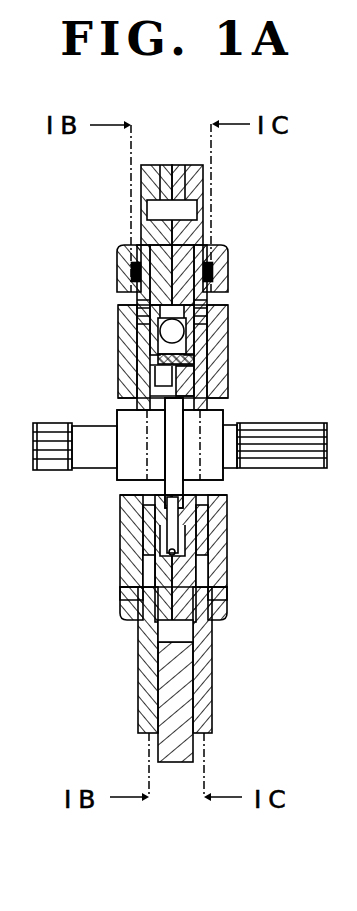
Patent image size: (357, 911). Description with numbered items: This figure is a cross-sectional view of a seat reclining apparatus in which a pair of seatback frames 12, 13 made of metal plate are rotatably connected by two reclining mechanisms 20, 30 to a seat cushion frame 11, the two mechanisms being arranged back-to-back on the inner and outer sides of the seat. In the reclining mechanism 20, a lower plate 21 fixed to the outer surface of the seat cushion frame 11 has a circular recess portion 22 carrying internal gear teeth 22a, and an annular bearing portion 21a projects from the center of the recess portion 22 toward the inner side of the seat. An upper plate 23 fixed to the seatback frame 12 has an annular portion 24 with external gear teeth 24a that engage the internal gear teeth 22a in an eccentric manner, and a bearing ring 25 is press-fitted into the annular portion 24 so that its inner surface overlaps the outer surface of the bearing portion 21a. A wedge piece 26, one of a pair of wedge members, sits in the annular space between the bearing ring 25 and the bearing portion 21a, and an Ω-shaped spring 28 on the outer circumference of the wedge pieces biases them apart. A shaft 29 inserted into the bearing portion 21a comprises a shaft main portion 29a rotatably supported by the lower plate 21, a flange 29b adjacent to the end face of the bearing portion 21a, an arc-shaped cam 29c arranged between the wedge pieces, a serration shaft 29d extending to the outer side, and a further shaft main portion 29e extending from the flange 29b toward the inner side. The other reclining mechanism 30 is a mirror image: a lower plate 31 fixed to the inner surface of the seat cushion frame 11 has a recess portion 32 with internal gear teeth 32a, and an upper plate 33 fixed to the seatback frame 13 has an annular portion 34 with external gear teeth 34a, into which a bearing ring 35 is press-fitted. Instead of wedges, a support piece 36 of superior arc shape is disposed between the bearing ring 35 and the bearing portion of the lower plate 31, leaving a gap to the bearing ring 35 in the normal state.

The seat cushion frame 11 is at (188, 716).
The seatback frame 12 is at (128, 252).
The seatback frame 13 is at (216, 250).
The reclining mechanism 20 is at (66, 276).
The lower plate 21 is at (120, 318).
The bearing portion 21a is at (130, 418).
The recess portion 22 is at (132, 600).
The internal gear teeth 22a is at (132, 592).
The upper plate 23 is at (150, 183).
The annular portion 24 is at (127, 548).
The external gear teeth 24a is at (128, 568).
The bearing ring 25 is at (142, 355).
The wedge piece 26 is at (135, 373).
The Ω-shaped spring 28 is at (186, 333).
The shaft 29 is at (300, 424).
The shaft main portion 29a is at (120, 452).
The flange 29b is at (180, 462).
The cam 29c is at (130, 495).
The serration shaft 29d is at (38, 432).
The shaft main portion 29e is at (212, 448).
The reclining mechanism 30 is at (285, 272).
The lower plate 31 is at (228, 315).
The recess portion 32 is at (218, 592).
The internal gear teeth 32a is at (222, 586).
The upper plate 33 is at (205, 173).
The annular portion 34 is at (205, 540).
The external gear teeth 34a is at (200, 560).
The bearing ring 35 is at (195, 360).
The support piece 36 is at (215, 375).